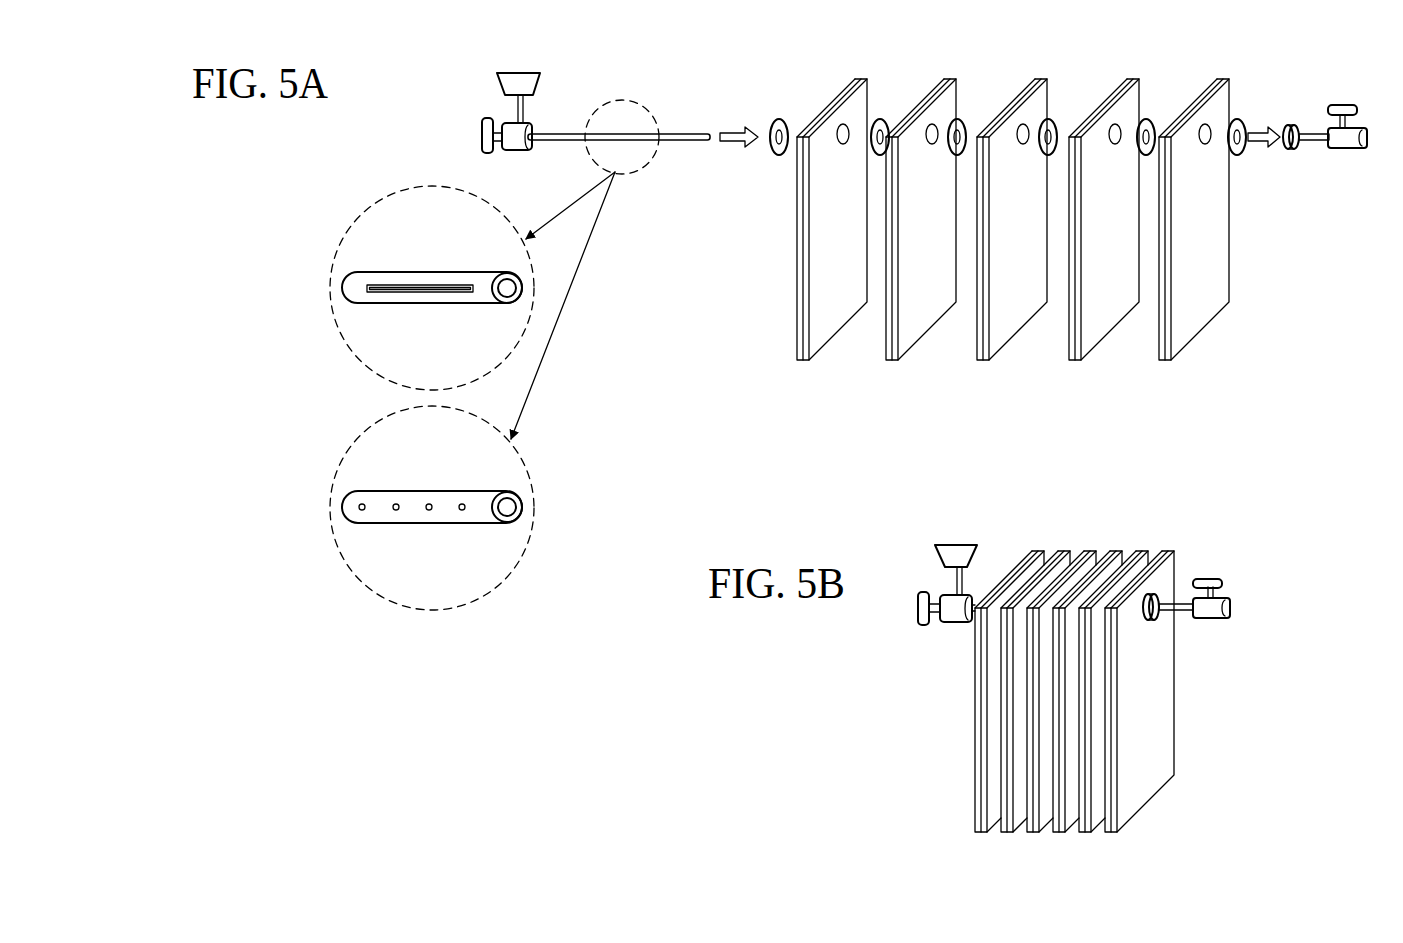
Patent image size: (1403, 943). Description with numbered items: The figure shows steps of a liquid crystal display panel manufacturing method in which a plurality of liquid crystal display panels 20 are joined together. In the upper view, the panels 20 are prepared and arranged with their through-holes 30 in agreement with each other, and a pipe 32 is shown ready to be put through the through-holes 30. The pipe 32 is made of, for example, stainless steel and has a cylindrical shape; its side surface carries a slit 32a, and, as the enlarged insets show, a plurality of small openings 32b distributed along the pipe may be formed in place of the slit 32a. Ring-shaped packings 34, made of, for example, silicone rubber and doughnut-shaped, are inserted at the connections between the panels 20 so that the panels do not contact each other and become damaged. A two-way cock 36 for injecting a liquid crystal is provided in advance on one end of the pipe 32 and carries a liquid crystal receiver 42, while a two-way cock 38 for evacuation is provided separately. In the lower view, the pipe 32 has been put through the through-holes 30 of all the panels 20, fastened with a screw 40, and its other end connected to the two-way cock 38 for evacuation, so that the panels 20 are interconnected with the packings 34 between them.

In FIG. 5A, the liquid crystal display panel 20 is at (805, 368).
In FIG. 5B, the liquid crystal display panel 20 is at (1112, 838).
In FIG. 5A, the through-hole 30 is at (843, 122).
In FIG. 5A, the pipe 32 is at (683, 130).
In FIG. 5A, the slit 32a is at (428, 303).
In FIG. 5A, the openings 32b is at (362, 511).
In FIG. 5A, the ring-shaped packing 34 is at (779, 118).
In FIG. 5A, the two-way cock for injecting a liquid crystal 36 is at (516, 152).
In FIG. 5B, the two-way cock for injecting a liquid crystal 36 is at (955, 625).
In FIG. 5A, the two-way cock for evacuation 38 is at (1342, 150).
In FIG. 5B, the two-way cock for evacuation 38 is at (1222, 620).
In FIG. 5A, the screw 40 is at (1291, 152).
In FIG. 5B, the screw 40 is at (1152, 622).
In FIG. 5A, the liquid crystal receiver 42 is at (500, 88).
In FIG. 5B, the liquid crystal receiver 42 is at (936, 558).